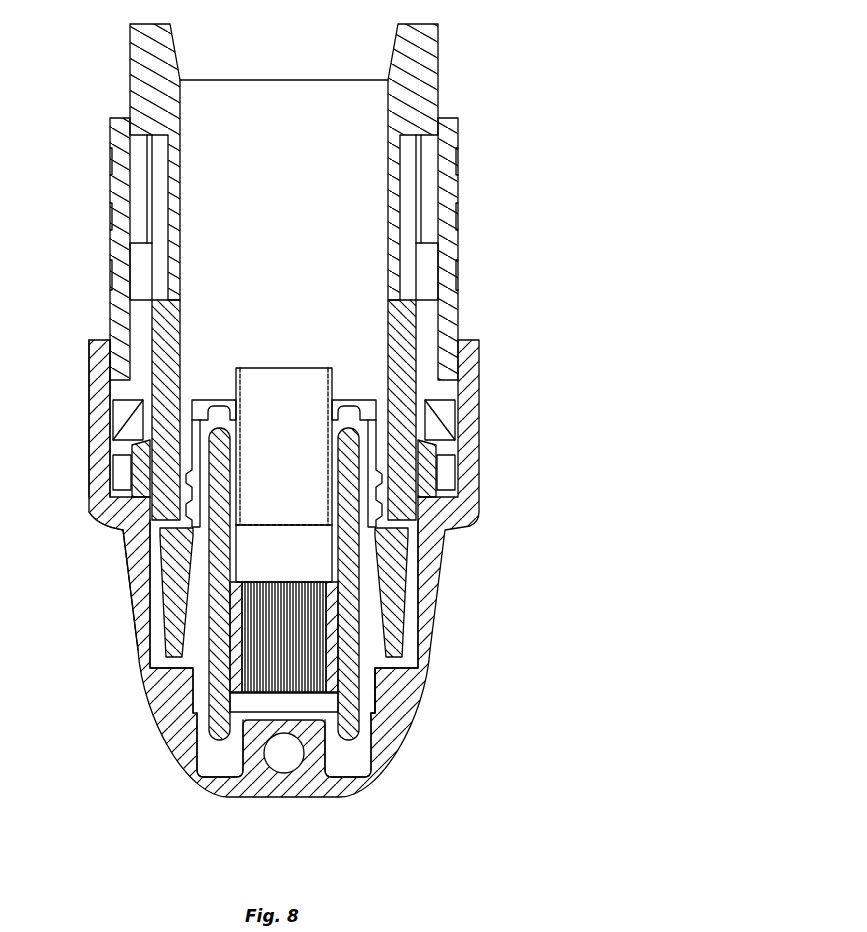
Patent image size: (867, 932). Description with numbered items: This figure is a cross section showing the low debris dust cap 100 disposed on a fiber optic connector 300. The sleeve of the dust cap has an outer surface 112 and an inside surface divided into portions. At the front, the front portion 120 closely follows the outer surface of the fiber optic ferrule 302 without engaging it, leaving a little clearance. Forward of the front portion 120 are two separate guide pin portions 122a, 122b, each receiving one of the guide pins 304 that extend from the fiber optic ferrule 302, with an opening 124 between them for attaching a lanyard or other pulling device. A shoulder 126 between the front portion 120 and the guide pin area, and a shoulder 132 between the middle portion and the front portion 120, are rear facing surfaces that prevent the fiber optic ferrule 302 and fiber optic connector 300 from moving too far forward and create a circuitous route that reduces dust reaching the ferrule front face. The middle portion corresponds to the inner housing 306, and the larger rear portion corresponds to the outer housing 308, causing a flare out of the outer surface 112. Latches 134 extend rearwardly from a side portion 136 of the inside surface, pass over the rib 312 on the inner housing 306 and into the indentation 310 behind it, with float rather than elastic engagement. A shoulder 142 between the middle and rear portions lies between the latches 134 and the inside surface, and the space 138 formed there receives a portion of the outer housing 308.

The low debris dust cap 100 is at (478, 508).
The outer surface 112 is at (89, 488).
The front portion 120 is at (298, 703).
The guide pin portion 122a is at (215, 763).
The guide pin portion 122b is at (355, 762).
The opening 124 is at (284, 757).
The shoulder 126 is at (372, 702).
The shoulder 132 is at (423, 655).
The latches 134 is at (143, 438).
The side portion 136 is at (490, 440).
The space 138 is at (115, 460).
The shoulder 142 is at (90, 508).
The fiber optic connector 300 is at (482, 130).
The fiber optic ferrule 302 is at (200, 676).
The guide pins 304 is at (350, 735).
The inner housing 306 is at (440, 34).
The outer housing 308 is at (458, 232).
The indentation 310 is at (163, 422).
The rib 312 is at (127, 530).